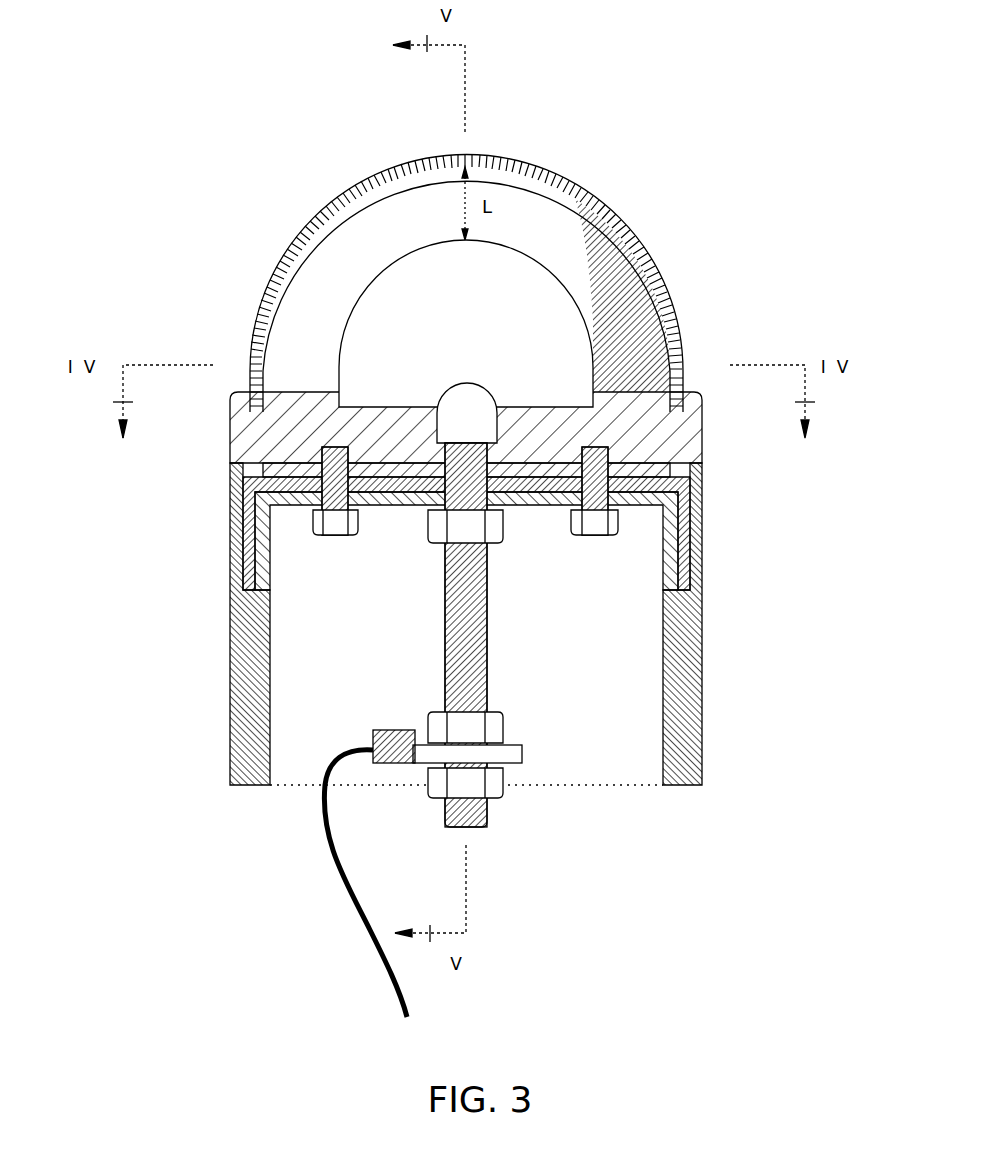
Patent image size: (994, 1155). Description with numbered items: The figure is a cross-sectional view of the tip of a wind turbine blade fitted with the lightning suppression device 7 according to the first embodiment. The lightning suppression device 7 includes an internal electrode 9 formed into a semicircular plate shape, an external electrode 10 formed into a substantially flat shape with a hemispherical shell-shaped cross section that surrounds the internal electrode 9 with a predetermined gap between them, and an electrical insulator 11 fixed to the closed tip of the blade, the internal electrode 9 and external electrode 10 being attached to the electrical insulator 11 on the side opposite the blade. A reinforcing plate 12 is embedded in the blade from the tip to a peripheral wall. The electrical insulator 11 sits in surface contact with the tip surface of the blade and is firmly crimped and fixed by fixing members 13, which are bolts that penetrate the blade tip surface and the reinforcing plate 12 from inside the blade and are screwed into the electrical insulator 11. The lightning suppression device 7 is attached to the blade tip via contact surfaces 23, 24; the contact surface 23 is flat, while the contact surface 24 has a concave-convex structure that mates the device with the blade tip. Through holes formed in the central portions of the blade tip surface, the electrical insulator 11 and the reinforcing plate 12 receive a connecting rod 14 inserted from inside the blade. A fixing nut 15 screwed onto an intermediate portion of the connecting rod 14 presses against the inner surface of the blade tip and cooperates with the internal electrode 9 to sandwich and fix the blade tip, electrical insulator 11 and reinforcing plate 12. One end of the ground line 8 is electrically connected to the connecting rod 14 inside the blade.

The lightning suppression device 7 is at (617, 200).
The ground line 8 is at (340, 877).
The internal electrode 9 is at (410, 287).
The external electrode 10 is at (282, 258).
The electrical insulator 11 is at (702, 418).
The reinforcing plate 12 is at (230, 482).
The fixing members 13 is at (343, 535).
The connecting rod 14 is at (445, 668).
The fixing nut 15 is at (430, 540).
The contact surface 23 is at (702, 543).
The contact surface 24 is at (702, 467).